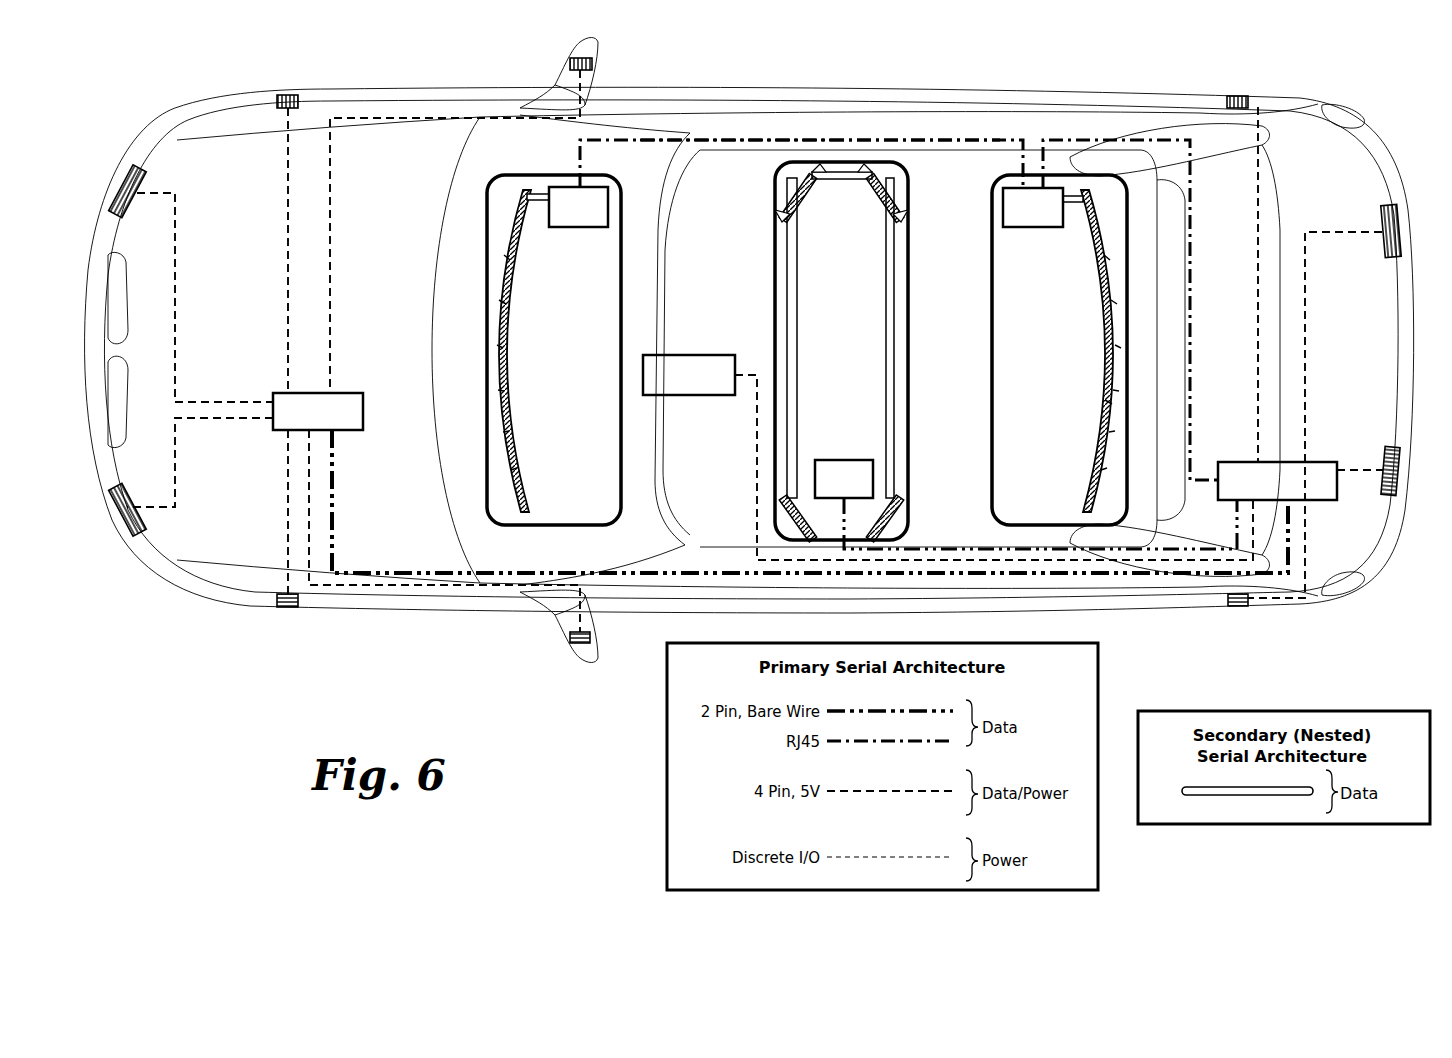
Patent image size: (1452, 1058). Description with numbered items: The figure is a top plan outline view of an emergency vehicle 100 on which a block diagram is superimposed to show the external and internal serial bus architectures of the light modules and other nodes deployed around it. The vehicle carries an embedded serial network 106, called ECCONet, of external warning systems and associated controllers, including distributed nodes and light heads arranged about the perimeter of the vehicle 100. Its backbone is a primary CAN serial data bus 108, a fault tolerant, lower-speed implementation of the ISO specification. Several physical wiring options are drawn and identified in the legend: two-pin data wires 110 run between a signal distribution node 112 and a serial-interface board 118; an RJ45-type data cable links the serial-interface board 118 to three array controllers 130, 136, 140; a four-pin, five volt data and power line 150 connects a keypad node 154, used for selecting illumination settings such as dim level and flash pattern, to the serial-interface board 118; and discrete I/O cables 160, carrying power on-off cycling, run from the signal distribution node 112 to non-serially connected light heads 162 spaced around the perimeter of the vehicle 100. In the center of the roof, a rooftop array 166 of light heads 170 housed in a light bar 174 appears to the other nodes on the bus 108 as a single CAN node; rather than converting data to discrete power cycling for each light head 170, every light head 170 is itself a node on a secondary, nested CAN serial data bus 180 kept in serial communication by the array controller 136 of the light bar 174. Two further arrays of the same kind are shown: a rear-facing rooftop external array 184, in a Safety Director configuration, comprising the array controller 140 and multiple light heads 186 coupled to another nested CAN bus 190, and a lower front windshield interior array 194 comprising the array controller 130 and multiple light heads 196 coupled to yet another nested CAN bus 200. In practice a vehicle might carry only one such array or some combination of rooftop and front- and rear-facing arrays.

The emergency vehicle 100 is at (161, 114).
The embedded serial network 106 is at (967, 133).
The primary CAN serial data bus 108 is at (715, 138).
The two-pin data wires 110 is at (333, 497).
The signal distribution node 112 is at (350, 393).
The serial-interface board 118 is at (1240, 462).
The array controller 130 is at (567, 236).
The array controller 136 is at (848, 460).
The array controller 140 is at (1043, 237).
The four-pin, five volt data and power line 150 is at (757, 430).
The keypad node 154 is at (677, 355).
The discrete I/O cables 160 is at (288, 232).
The non-serially connected light heads 162 is at (114, 182).
The rooftop array 166 is at (962, 347).
The light heads 170 is at (887, 178).
The light bar 174 is at (773, 313).
The secondary (nested) CAN serial data bus 180 is at (796, 345).
The rear-facing rooftop external array 184 is at (1029, 290).
The light heads 186 is at (1098, 210).
The nested CAN bus 190 is at (1108, 402).
The lower front windshield interior array 194 is at (559, 350).
The light heads 196 is at (582, 494).
The nested CAN bus 200 is at (527, 452).